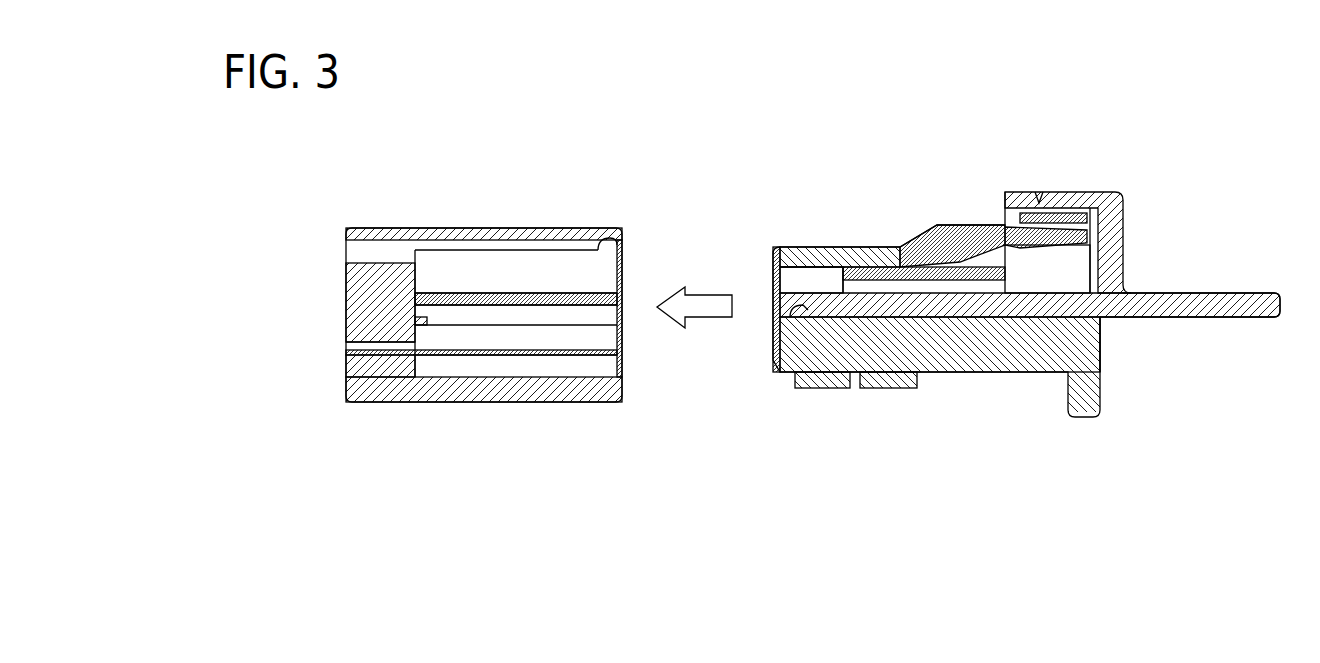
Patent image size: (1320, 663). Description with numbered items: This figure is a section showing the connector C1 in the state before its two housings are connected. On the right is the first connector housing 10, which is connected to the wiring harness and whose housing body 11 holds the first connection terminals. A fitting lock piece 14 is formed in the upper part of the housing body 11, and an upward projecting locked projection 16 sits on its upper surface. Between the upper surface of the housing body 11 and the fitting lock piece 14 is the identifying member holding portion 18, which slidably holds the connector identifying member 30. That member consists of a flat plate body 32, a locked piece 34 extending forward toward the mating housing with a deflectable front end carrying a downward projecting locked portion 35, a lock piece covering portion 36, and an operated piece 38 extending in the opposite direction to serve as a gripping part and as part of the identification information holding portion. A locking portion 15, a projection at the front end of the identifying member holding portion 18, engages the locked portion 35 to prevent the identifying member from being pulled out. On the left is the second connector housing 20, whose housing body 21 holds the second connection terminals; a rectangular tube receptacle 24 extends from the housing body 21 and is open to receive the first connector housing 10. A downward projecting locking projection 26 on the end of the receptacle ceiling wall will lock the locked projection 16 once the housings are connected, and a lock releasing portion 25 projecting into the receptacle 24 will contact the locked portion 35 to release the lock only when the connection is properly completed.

The connector C1 is at (703, 150).
The first connector housing 10 is at (915, 345).
The housing body 11 is at (948, 367).
The fitting lock piece 14 is at (1030, 243).
The locking portion 15 is at (812, 315).
The locked projection 16 is at (943, 227).
The identifying member holding portion 18 is at (917, 287).
The second connector housing 20 is at (504, 338).
The housing body 21 is at (383, 280).
The receptacle 24 is at (538, 229).
The lock releasing portion 25 is at (427, 310).
The locking projection 26 is at (602, 250).
The connector identifying member 30 is at (1138, 269).
The body 32 is at (1008, 303).
The locked piece 34 is at (815, 293).
The locked portion 35 is at (790, 312).
The lock piece covering portion 36 is at (1123, 208).
The operated piece 38 is at (1210, 297).